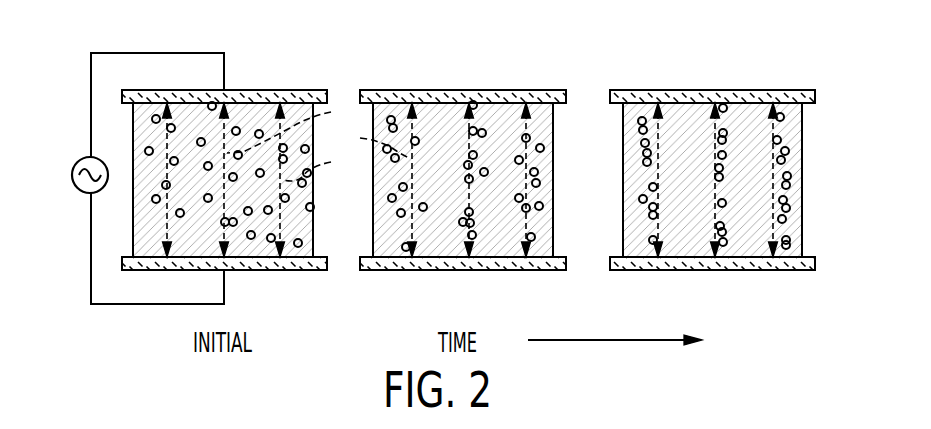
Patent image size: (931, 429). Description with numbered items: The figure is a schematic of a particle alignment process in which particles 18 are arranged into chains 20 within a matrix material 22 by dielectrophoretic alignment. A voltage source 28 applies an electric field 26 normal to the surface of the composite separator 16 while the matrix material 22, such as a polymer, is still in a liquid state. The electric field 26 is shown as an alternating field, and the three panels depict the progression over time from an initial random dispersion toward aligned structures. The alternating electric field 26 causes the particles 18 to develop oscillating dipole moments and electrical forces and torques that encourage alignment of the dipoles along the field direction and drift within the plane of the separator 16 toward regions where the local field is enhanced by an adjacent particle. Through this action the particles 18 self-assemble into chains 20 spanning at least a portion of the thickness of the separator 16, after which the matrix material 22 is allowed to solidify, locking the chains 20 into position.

The composite separator 16 is at (803, 115).
The particles 18 is at (299, 242).
The chains 20 is at (790, 197).
The matrix material 22 is at (798, 233).
The electric field 26 is at (318, 142).
The voltage source 28 is at (72, 174).